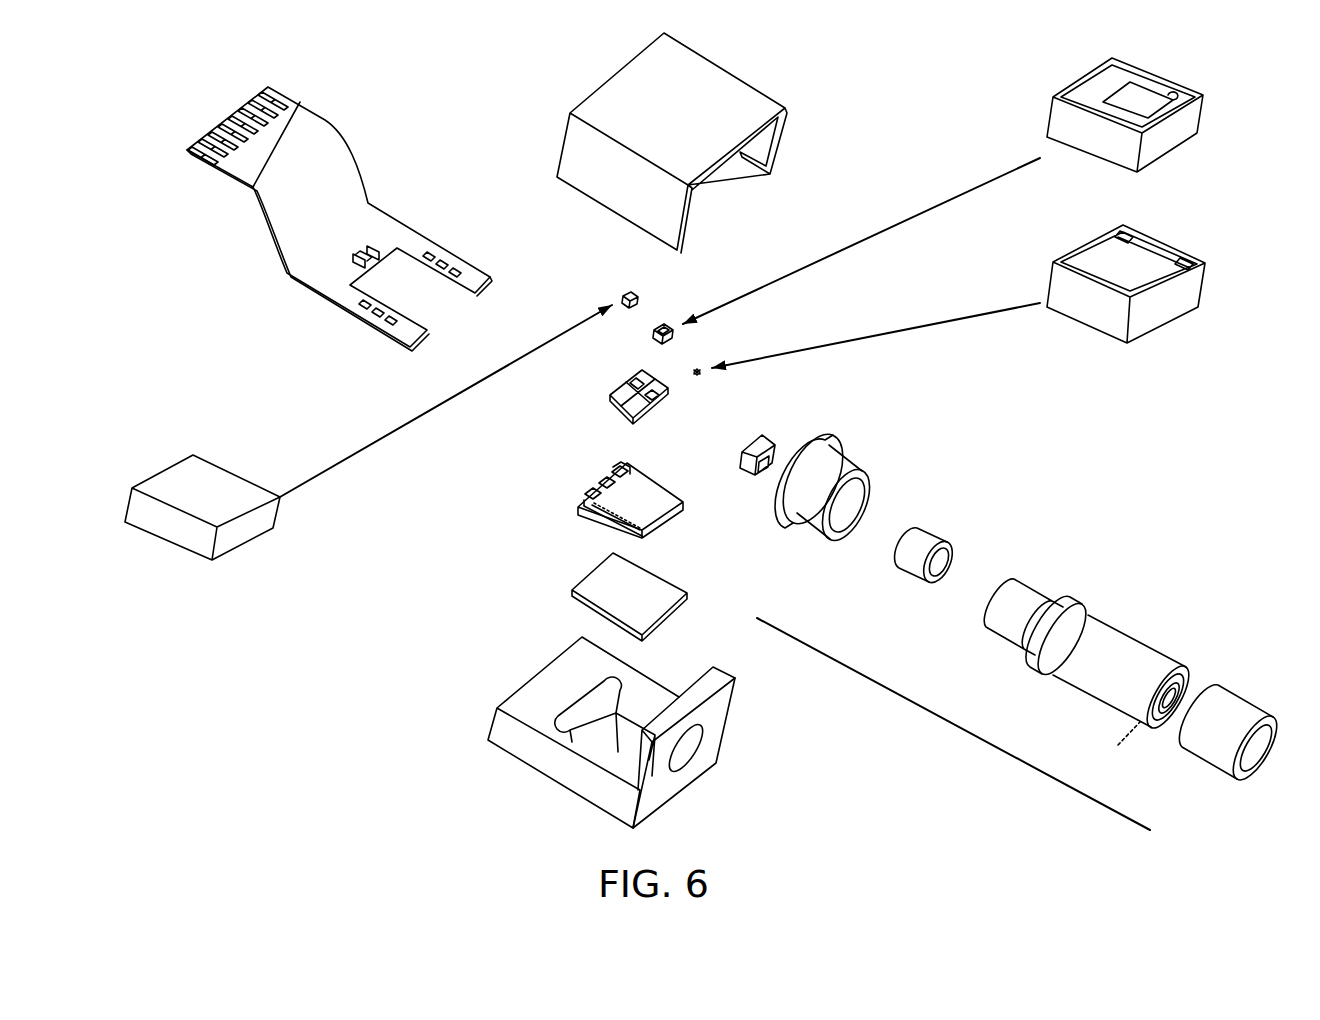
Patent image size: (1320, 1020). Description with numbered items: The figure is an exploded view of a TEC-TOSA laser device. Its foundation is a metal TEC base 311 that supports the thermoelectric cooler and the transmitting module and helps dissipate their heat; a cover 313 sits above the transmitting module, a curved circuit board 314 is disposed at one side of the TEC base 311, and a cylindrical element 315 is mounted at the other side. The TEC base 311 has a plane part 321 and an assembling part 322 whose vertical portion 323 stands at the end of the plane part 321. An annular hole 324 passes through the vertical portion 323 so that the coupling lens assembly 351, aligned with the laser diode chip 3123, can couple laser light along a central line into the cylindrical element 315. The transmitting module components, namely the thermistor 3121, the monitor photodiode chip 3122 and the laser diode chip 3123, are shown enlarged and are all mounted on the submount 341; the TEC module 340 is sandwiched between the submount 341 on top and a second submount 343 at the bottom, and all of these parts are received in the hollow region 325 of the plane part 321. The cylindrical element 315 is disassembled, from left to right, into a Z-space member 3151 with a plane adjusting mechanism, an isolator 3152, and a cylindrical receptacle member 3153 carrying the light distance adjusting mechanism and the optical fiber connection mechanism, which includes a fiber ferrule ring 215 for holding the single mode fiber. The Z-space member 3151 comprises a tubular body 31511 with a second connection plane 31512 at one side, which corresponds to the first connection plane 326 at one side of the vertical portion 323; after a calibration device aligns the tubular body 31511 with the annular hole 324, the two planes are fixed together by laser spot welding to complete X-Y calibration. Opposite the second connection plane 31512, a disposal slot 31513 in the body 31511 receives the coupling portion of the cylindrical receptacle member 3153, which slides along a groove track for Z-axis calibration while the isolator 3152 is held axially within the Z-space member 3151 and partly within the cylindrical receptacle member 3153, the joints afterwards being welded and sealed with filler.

The TEC base 311 is at (586, 736).
The cover 313 is at (615, 192).
The curved circuit board 314 is at (272, 248).
The cylindrical element 315 is at (943, 734).
The fiber ferrule ring 215 is at (1212, 720).
The plane part 321 is at (540, 750).
The assembling part 322 is at (752, 747).
The vertical portion 323 is at (730, 708).
The annular hole 324 is at (688, 740).
The hollow region 325 is at (598, 727).
The first connection plane 326 is at (662, 787).
The TEC module 340 is at (597, 505).
The submount 341 is at (618, 403).
The plate 343 is at (597, 603).
The coupling lens assembly 351 is at (745, 475).
The thermistor 3121 is at (197, 545).
The monitor photo diode chip 3122 is at (1113, 137).
The laser diode chip 3123 is at (1110, 310).
The Z-space member 3151 is at (856, 500).
The isolator 3152 is at (915, 547).
The cylindrical receptacle member 3153 is at (1103, 665).
The tubular body 31511 is at (838, 468).
The second connection plane 31512 is at (810, 445).
The disposal slot 31513 is at (853, 492).